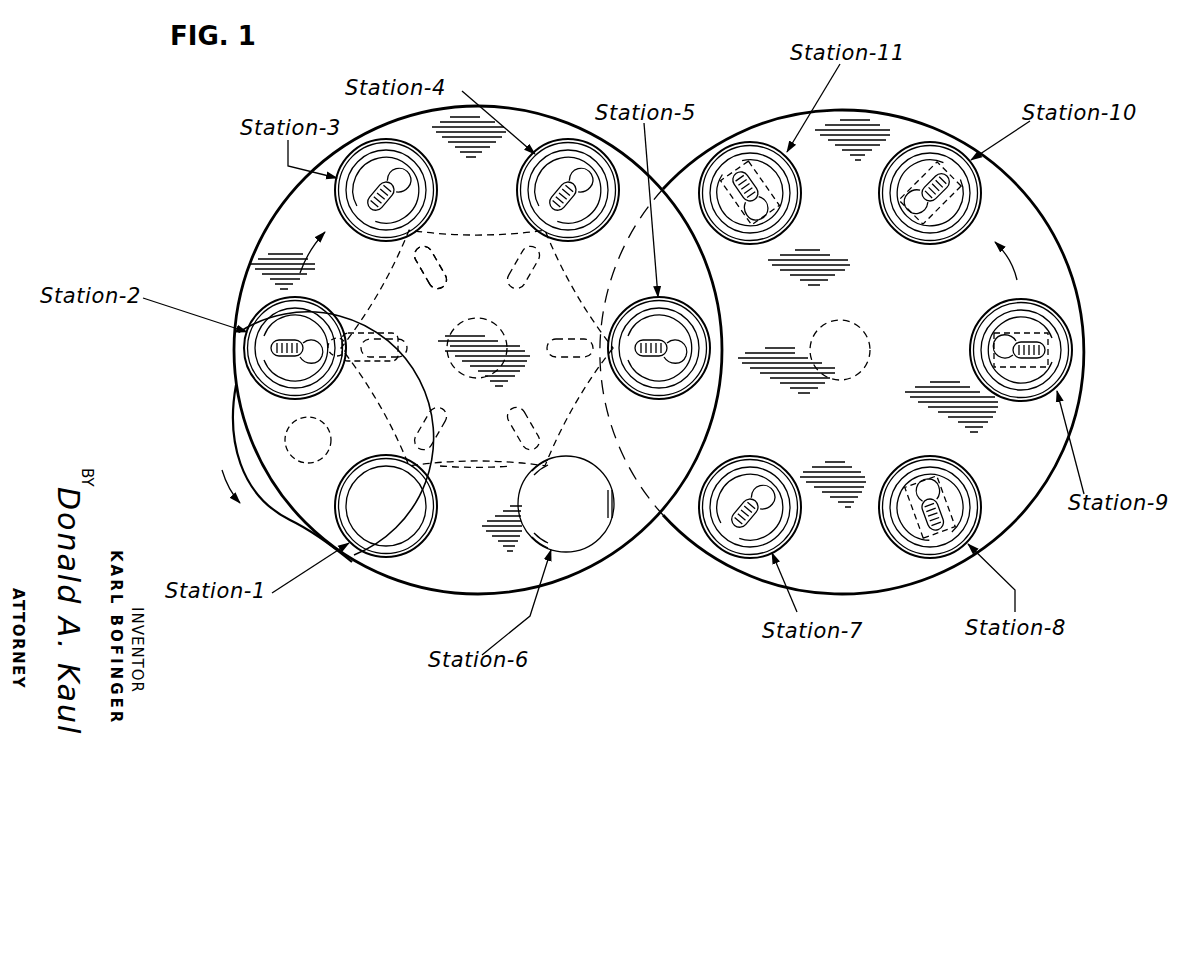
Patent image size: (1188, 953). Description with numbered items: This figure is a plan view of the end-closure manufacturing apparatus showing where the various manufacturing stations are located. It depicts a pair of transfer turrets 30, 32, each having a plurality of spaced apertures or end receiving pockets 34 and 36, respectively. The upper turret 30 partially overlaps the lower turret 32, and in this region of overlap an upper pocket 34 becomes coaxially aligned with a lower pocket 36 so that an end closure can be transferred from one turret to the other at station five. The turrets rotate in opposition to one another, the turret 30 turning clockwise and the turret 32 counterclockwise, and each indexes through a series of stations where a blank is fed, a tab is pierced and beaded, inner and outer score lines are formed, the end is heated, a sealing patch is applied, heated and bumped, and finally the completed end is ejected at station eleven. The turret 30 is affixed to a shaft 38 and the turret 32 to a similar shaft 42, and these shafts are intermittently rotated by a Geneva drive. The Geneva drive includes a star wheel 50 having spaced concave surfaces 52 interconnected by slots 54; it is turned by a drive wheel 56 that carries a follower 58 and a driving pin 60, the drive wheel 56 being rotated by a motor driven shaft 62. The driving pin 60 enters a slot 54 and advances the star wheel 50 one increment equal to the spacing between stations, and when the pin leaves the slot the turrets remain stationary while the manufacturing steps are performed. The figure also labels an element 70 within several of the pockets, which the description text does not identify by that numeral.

The transfer turret 30 is at (266, 230).
The transfer turret 32 is at (1057, 240).
The end receiving pocket 34 is at (589, 550).
The end receiving pocket 36 is at (979, 508).
The shaft 38 is at (498, 329).
The shaft 42 is at (859, 331).
The star wheel 50 is at (374, 283).
The concave surface 52 is at (470, 470).
The slot 54 is at (508, 268).
The drive wheel 56 is at (183, 440).
The follower 58 is at (282, 515).
The driving pin 60 is at (362, 357).
The motor driven shaft 62 is at (331, 437).
The workpiece (lamp base) 70 is at (410, 198).